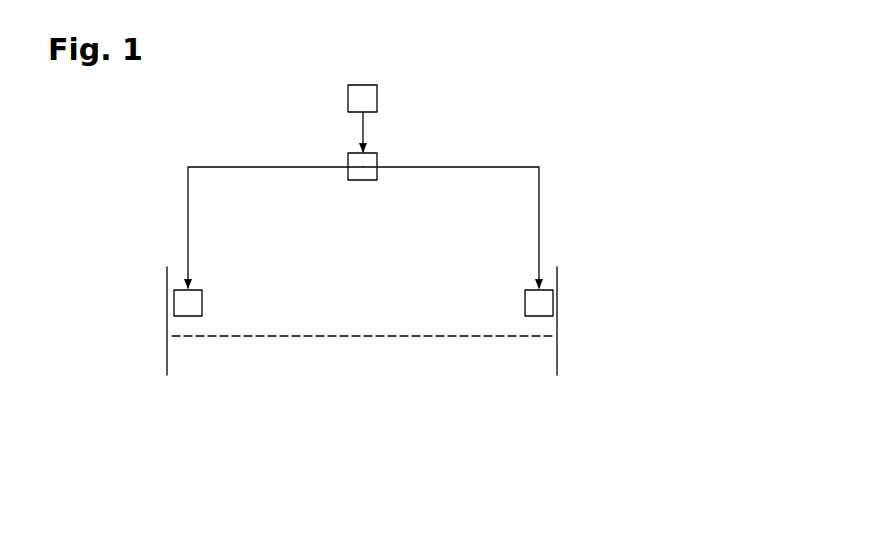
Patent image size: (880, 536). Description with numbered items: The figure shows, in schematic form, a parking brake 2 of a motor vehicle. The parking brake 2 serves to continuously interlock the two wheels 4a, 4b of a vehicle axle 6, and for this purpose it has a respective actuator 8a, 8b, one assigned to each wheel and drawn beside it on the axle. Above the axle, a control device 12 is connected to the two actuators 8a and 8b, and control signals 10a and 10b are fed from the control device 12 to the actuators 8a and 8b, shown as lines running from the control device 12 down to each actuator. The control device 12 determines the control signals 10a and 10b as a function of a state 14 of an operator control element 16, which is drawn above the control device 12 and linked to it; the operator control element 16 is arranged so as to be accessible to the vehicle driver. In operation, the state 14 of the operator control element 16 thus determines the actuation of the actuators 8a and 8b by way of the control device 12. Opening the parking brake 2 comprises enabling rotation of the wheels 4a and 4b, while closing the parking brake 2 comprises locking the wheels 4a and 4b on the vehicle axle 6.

The parking brake 2 is at (652, 150).
The wheel 4a is at (167, 327).
The wheel 4b is at (557, 322).
The vehicle axle 6 is at (369, 338).
The actuator 8a is at (202, 303).
The actuator 8b is at (525, 303).
The control signal 10a is at (188, 219).
The control signal 10b is at (539, 219).
The control device 12 is at (377, 161).
The state 14 is at (363, 124).
The operator control element 16 is at (377, 96).